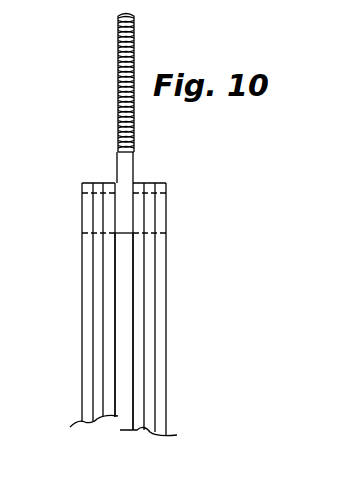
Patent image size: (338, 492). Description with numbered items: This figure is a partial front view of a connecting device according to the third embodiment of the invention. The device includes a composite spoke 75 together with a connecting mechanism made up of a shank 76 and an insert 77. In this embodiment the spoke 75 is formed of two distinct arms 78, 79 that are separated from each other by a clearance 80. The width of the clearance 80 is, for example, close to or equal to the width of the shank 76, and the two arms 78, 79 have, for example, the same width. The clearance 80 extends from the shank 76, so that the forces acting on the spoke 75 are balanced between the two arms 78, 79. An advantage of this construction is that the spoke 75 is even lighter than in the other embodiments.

The composite spoke 75 is at (82, 362).
The shank 76 is at (133, 172).
The insert 77 is at (127, 219).
The arm 78 is at (82, 280).
The arm 79 is at (167, 313).
The clearance 80 is at (124, 396).